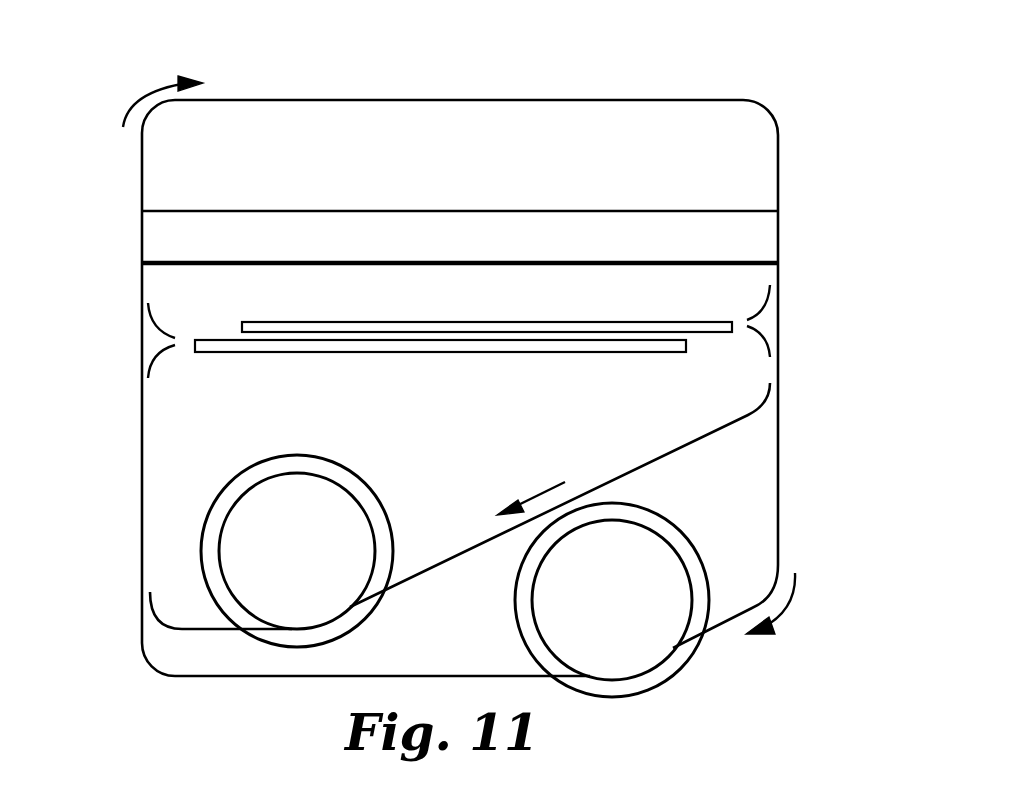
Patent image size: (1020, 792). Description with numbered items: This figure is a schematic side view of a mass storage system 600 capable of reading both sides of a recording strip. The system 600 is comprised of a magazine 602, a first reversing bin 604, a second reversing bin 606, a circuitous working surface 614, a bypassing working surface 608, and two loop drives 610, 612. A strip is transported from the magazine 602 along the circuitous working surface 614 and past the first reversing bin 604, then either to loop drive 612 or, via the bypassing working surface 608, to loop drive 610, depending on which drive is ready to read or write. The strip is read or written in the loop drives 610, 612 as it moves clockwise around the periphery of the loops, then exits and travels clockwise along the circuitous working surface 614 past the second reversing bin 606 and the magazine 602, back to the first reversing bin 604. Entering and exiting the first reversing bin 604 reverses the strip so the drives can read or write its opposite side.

The mass storage system 600 is at (716, 62).
The magazine 602 is at (500, 210).
The first reversing bin 604 is at (708, 320).
The second reversing bin 606 is at (497, 353).
The bypassing working surface 608 is at (663, 460).
The loop drive 610 is at (347, 468).
The loop drive 612 is at (518, 633).
The circuitous working surface 614 is at (142, 198).